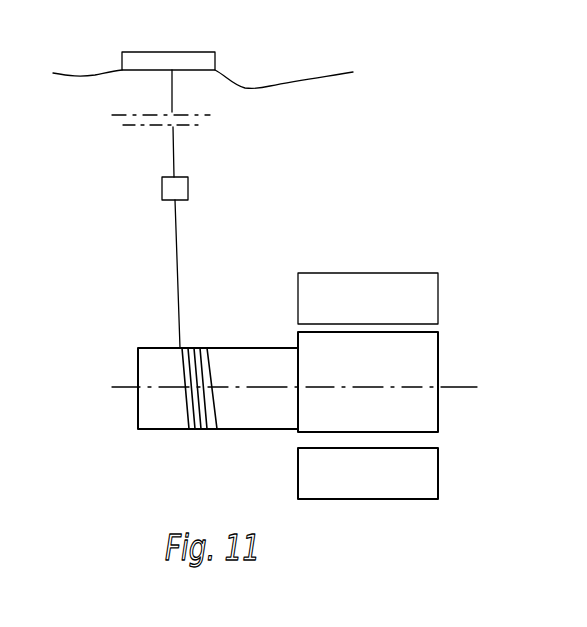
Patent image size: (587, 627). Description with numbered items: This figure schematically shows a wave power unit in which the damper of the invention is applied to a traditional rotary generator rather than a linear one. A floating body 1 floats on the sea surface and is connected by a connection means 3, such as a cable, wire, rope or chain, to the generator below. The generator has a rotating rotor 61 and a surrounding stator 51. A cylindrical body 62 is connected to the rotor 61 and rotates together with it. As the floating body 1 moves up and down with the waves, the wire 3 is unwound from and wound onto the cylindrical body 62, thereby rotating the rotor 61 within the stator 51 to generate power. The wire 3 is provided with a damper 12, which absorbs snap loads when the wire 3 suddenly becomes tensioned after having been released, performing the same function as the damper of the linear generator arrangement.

The floating body 1 is at (182, 56).
The connection means 3 is at (177, 260).
The damper 12 is at (188, 186).
The stator 51 is at (348, 278).
The rotor 61 is at (327, 410).
The cylindrical body 62 is at (145, 403).